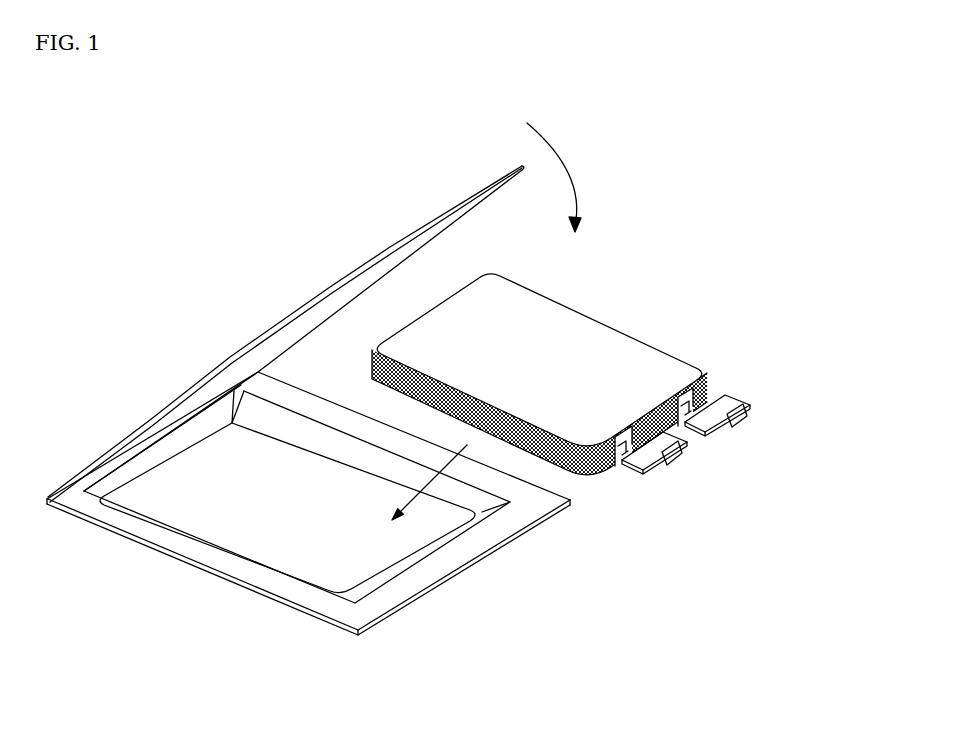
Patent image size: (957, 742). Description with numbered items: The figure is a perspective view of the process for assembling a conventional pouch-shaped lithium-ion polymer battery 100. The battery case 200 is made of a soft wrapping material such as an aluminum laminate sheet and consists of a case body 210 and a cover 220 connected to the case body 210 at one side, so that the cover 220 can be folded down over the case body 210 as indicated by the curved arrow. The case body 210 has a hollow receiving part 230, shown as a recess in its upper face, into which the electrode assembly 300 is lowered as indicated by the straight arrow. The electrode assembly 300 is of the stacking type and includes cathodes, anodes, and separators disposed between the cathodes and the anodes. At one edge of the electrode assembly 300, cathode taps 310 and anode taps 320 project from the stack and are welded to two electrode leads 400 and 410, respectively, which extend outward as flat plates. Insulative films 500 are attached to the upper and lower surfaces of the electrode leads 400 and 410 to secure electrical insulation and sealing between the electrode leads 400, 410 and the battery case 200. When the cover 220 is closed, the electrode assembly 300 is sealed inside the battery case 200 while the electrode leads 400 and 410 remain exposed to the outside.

The lithium-ion polymer battery 100 is at (76, 129).
The battery case 200 is at (145, 376).
The case body 210 is at (248, 595).
The cover 220 is at (335, 282).
The hollow receiving part 230 is at (382, 572).
The electrode assembly 300 is at (613, 340).
The cathode taps 310 is at (708, 378).
The anode taps 320 is at (622, 452).
The electrode lead 400 is at (750, 418).
The electrode lead 410 is at (677, 463).
The insulative films 500 is at (685, 460).